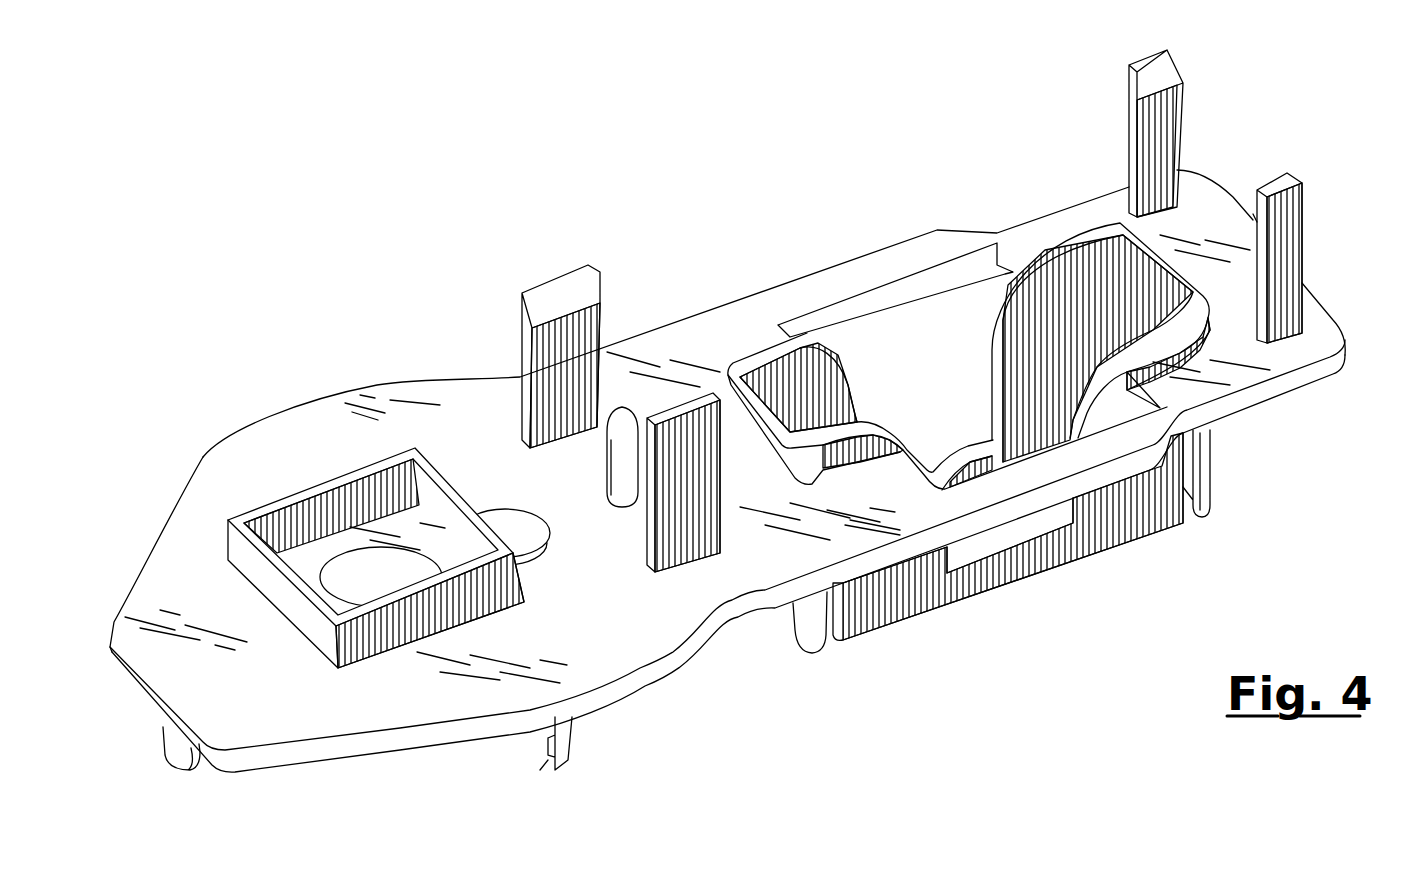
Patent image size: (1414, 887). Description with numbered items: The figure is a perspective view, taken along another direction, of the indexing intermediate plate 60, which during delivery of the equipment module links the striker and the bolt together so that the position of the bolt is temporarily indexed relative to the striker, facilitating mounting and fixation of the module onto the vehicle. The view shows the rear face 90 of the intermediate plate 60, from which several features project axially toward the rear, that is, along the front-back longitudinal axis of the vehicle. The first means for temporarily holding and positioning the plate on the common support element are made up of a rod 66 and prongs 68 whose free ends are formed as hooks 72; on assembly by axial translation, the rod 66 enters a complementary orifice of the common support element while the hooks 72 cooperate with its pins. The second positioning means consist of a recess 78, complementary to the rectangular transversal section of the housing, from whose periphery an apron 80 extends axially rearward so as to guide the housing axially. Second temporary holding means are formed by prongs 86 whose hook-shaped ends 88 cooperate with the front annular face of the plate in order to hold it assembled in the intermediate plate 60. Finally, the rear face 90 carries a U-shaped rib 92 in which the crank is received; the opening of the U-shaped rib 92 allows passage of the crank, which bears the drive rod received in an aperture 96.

The intermediate plate 60 is at (930, 167).
The rod 66 is at (623, 420).
The prongs 68 is at (1287, 247).
The hooks 72 is at (1253, 214).
The recess 78 is at (917, 400).
The apron 80 is at (1133, 520).
The prongs 86 is at (575, 722).
The hook-shaped ends 88 is at (540, 770).
The rear face 90 is at (168, 580).
The U-shaped rib 92 is at (267, 507).
The aperture 96 is at (483, 537).